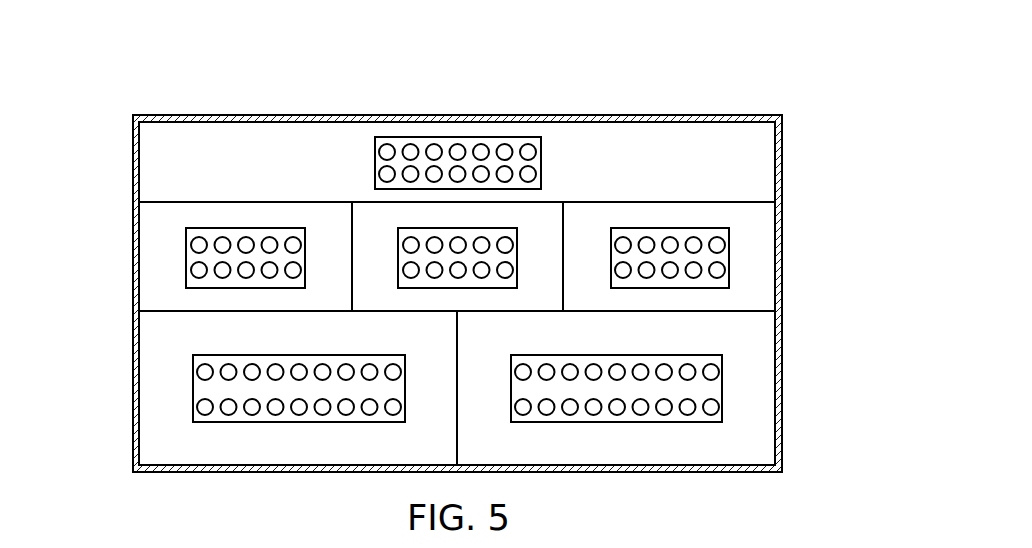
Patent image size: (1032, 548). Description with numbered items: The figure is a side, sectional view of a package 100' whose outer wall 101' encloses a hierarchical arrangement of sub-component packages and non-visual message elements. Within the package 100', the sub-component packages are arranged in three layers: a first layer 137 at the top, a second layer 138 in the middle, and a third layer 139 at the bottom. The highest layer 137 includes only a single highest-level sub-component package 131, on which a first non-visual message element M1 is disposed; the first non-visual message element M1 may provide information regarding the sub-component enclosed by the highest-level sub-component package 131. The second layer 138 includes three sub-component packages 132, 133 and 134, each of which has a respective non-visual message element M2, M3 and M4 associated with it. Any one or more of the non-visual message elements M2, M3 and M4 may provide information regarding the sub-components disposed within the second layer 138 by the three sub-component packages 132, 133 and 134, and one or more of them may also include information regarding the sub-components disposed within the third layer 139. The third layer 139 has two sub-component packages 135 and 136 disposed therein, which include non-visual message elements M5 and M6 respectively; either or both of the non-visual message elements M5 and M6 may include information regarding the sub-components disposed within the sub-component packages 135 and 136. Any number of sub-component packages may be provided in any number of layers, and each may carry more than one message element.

The package 100' is at (421, 246).
The housing 101' is at (457, 267).
The highest-level sub-component package 131 is at (156, 162).
The sub-component package 132 is at (155, 222).
The sub-component package 133 is at (370, 217).
The sub-component package 134 is at (707, 216).
The sub-component package 135 is at (157, 340).
The sub-component package 136 is at (744, 444).
The first layer 137 is at (793, 155).
The second layer 138 is at (793, 250).
The third layer 139 is at (793, 387).
The first non-visual message element M1 is at (443, 137).
The non-visual message element M2 is at (233, 228).
The non-visual message element M3 is at (435, 288).
The non-visual message element M4 is at (660, 228).
The non-visual message element M5 is at (292, 422).
The non-visual message element M6 is at (612, 422).